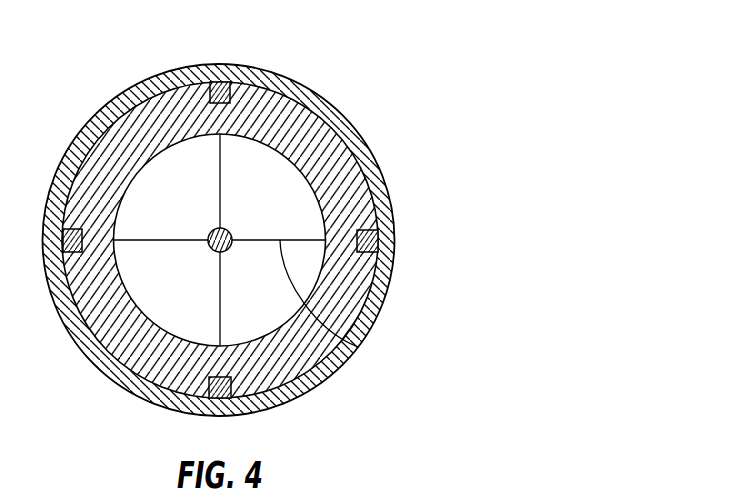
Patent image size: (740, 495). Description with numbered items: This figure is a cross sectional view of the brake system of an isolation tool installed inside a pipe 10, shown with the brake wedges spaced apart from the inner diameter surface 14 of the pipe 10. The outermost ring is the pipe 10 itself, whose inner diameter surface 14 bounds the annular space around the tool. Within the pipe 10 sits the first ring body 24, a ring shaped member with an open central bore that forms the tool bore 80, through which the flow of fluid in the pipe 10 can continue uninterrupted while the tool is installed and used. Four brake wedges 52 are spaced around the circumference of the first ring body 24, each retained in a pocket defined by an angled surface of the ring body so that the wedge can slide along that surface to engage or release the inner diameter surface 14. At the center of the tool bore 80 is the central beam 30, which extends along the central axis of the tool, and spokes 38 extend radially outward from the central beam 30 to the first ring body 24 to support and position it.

The pipe 10 is at (318, 100).
The inner diameter surface 14 is at (176, 72).
The first ring body 24 is at (360, 181).
The brake wedge 52 is at (228, 81).
The tool bore 80 is at (186, 210).
The central beam 30 is at (229, 230).
The spoke 38 is at (358, 347).